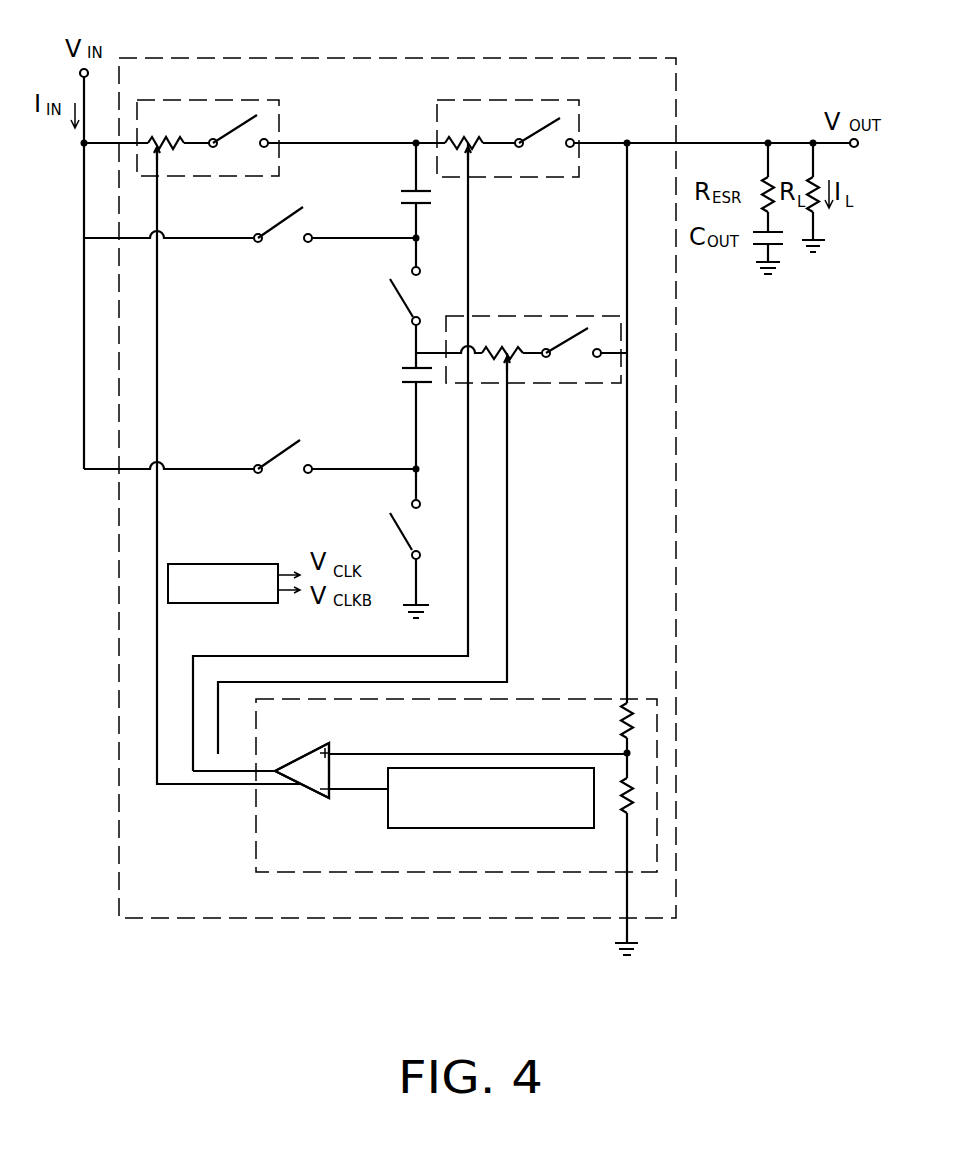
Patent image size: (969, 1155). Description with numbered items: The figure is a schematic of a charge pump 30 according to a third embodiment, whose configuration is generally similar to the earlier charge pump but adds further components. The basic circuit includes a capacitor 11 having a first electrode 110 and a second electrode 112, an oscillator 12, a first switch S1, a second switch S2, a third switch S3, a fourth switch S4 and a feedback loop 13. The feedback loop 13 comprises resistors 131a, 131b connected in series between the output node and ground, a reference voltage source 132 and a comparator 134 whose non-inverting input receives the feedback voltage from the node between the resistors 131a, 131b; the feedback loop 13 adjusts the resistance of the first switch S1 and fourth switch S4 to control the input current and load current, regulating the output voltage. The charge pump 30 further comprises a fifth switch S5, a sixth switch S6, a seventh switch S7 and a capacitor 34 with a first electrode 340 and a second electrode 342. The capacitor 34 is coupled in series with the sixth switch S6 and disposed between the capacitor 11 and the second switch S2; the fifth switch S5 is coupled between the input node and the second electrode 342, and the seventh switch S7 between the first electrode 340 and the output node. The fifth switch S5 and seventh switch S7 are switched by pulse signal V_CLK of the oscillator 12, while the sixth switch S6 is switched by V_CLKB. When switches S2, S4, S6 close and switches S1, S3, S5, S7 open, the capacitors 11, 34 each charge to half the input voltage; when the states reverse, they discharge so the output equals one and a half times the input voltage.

The charge pump 30 is at (433, 68).
The first switch S1 is at (543, 107).
The second switch S2 is at (408, 540).
The third switch S3 is at (272, 222).
The fourth switch S4 is at (270, 105).
The fifth switch S5 is at (288, 443).
The sixth switch S6 is at (407, 298).
The seventh switch S7 is at (523, 327).
The capacitor 11 is at (338, 167).
The first electrode 110 is at (408, 188).
The second electrode 112 is at (408, 207).
The capacitor 34 is at (322, 335).
The first electrode 340 is at (405, 366).
The second electrode 342 is at (405, 386).
The oscillator 12 is at (217, 563).
The feedback loop 13 is at (522, 710).
The resistor 131a is at (625, 735).
The resistor 131b is at (623, 805).
The reference voltage source 132 is at (488, 823).
The comparator 134 is at (308, 755).